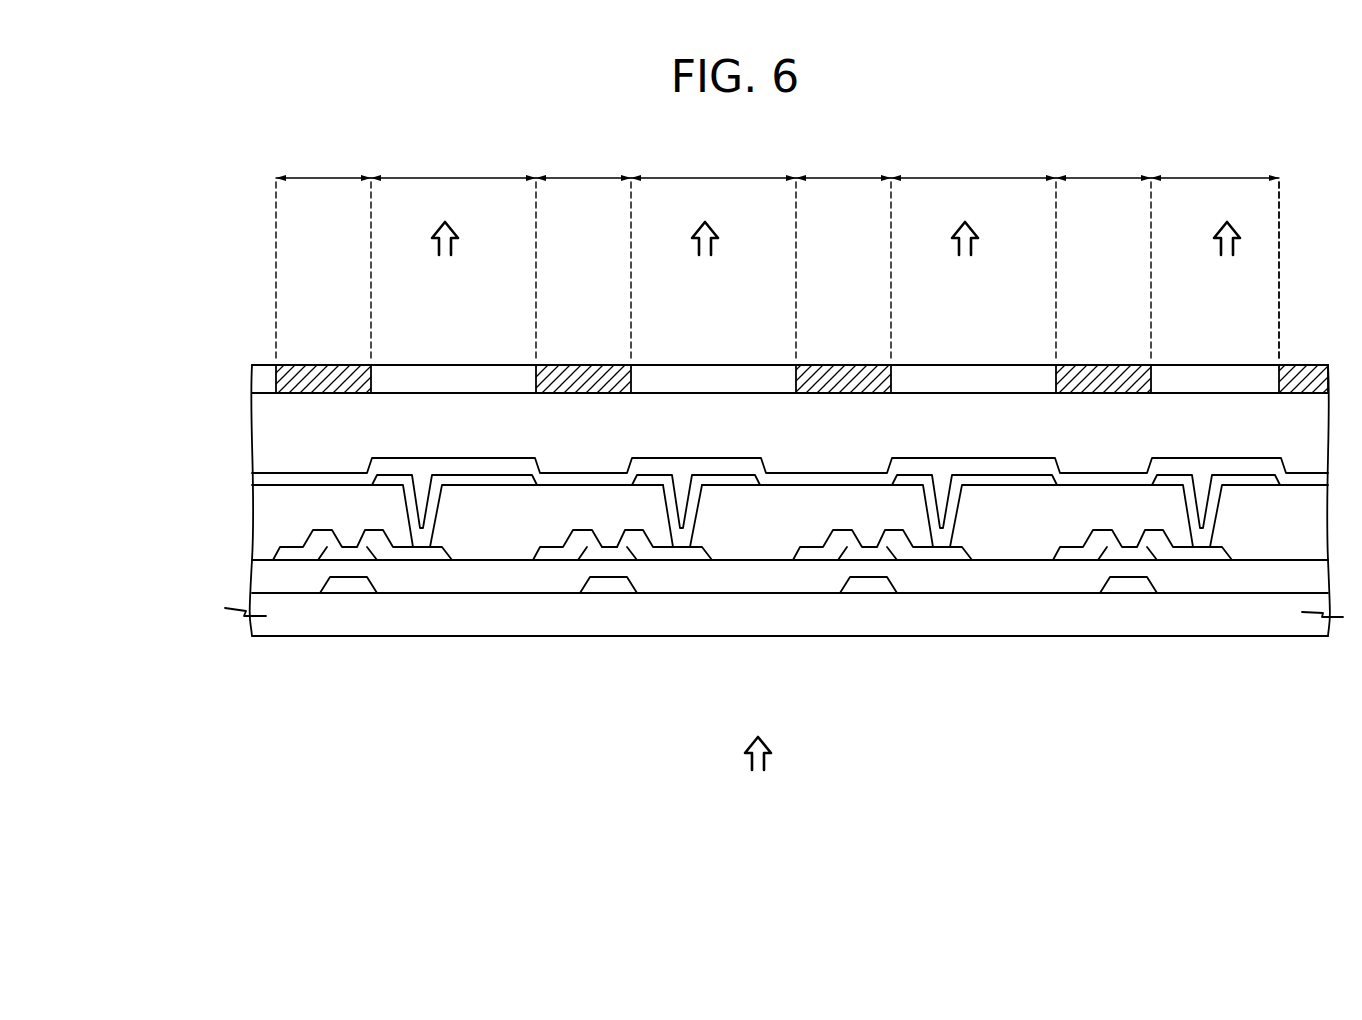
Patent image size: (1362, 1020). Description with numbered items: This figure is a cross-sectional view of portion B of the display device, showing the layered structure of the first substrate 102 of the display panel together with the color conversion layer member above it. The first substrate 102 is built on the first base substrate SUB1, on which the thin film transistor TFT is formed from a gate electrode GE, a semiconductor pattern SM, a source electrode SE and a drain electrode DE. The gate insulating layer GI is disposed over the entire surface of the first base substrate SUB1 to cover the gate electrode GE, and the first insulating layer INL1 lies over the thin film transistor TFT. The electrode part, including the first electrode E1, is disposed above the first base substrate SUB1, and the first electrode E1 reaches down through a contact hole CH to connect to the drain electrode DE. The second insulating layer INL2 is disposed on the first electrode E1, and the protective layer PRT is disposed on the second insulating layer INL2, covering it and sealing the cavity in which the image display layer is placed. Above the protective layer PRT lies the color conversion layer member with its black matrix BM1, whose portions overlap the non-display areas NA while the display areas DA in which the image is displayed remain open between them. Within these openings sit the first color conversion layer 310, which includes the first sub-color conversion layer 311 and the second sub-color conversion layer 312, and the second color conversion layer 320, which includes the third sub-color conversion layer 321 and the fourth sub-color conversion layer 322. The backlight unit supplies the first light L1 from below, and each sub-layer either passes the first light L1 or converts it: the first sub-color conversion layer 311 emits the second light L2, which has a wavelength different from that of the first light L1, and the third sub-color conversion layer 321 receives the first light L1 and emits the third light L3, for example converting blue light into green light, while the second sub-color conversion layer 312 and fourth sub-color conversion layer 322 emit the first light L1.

The black matrix BM1 is at (290, 379).
The protective layer PRT is at (258, 432).
The second insulating layer INL2 is at (261, 482).
The first insulating layer INL1 is at (268, 523).
The gate insulating layer GI is at (259, 578).
The first base substrate SUB1 is at (258, 622).
The first substrate 102 is at (155, 513).
The source electrode SE is at (553, 550).
The gate electrode GE is at (600, 583).
The semiconductor pattern SM is at (610, 550).
The drain electrode DE is at (668, 553).
The contact hole CH is at (695, 519).
The first electrode E1 is at (737, 478).
The thin film transistor TFT is at (618, 638).
The first color conversion layer 310 is at (583, 314).
The first sub-color conversion layer 311 is at (438, 373).
The second sub-color conversion layer 312 is at (713, 333).
The second color conversion layer 320 is at (1085, 317).
The third sub-color conversion layer 321 is at (958, 373).
The fourth sub-color conversion layer 322 is at (1215, 336).
The non-display area NA is at (713, 167).
The display area DA is at (825, 167).
The first light L1 is at (966, 494).
The second light L2 is at (445, 223).
The third light L3 is at (965, 223).
The portion B is at (1310, 163).